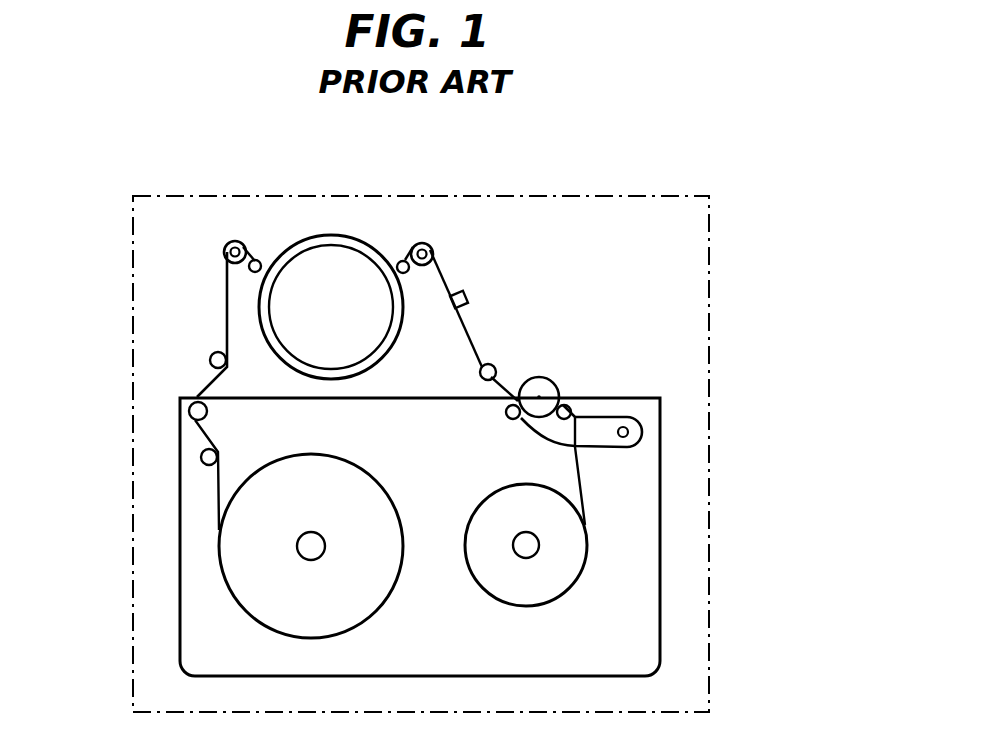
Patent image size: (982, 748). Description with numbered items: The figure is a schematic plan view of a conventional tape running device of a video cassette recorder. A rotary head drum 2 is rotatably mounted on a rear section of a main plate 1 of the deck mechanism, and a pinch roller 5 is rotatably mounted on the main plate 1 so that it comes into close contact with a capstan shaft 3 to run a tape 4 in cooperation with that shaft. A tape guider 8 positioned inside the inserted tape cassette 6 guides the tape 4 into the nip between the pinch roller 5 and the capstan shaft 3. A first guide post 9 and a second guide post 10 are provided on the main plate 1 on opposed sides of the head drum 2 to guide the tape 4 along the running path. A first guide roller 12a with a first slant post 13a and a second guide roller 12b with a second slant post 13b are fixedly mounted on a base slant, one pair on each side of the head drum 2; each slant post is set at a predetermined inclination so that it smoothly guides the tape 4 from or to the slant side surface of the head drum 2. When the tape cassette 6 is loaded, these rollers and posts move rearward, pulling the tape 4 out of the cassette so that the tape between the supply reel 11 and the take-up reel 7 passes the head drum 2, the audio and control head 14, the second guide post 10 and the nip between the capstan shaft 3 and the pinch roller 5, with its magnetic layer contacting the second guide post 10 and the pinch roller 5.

The main plate 1 is at (692, 230).
The rotary head drum 2 is at (326, 235).
The capstan shaft 3 is at (522, 413).
The tape 4 is at (227, 302).
The pinch roller 5 is at (556, 383).
The tape cassette 6 is at (660, 418).
The take-up reel 7 is at (577, 557).
The tape guider 8 is at (192, 404).
The first guide post 9 is at (212, 358).
The second guide post 10 is at (496, 366).
The supply reel 11 is at (233, 567).
The first guide roller 12a is at (226, 243).
The second guide roller 12b is at (430, 245).
The first slant post 13a is at (258, 259).
The second slant post 13b is at (401, 260).
The audio and control head 14 is at (466, 298).